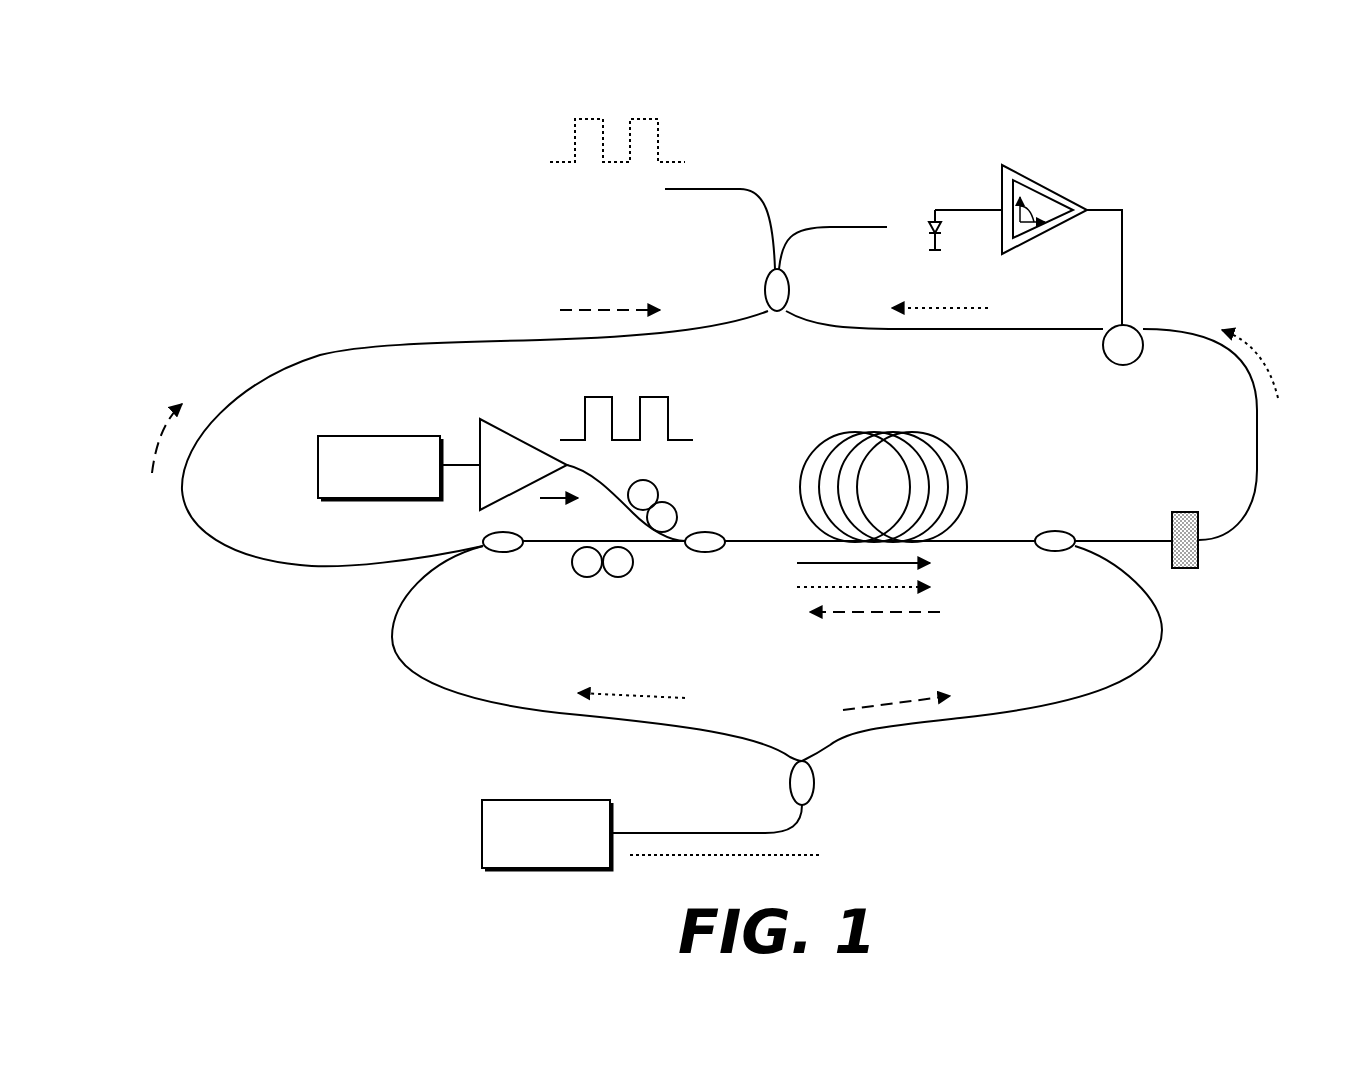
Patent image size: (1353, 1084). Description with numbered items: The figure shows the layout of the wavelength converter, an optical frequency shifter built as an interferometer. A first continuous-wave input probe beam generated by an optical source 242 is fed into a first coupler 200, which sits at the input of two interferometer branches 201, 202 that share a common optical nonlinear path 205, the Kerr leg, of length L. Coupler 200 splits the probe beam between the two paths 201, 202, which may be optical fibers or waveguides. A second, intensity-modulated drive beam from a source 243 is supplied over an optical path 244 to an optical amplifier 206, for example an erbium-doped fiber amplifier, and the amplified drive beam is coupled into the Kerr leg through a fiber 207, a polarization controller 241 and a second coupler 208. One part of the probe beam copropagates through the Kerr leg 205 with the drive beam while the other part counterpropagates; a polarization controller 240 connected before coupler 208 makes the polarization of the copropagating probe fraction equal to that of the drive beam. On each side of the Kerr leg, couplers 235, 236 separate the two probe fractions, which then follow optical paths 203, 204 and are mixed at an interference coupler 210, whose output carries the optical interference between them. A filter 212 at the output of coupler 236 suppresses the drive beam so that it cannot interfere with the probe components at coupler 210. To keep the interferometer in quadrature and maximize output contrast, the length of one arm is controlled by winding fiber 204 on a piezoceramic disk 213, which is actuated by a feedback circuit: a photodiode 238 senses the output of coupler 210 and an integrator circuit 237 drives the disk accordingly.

The first coupler 200 is at (813, 790).
The interferometer branch 201 is at (503, 705).
The interferometer branch 202 is at (1112, 680).
The optical path 203 is at (364, 343).
The optical path 204 is at (1257, 455).
The Kerr leg 205 is at (888, 432).
The optical amplifier 206 is at (533, 483).
The fiber 207 is at (600, 478).
The second coupler 208 is at (705, 553).
The interference coupler 210 is at (766, 285).
The filter 212 is at (1187, 512).
The piezoceramic disk 213 is at (1122, 365).
The coupler 235 is at (500, 553).
The coupler 236 is at (1053, 551).
The integrator circuit 237 is at (1052, 188).
The photodiode 238 is at (928, 226).
The polarization controller 240 is at (603, 577).
The polarization controller 241 is at (675, 507).
The optical source 242 is at (482, 838).
The source 243 is at (378, 498).
The optical path 244 is at (462, 455).